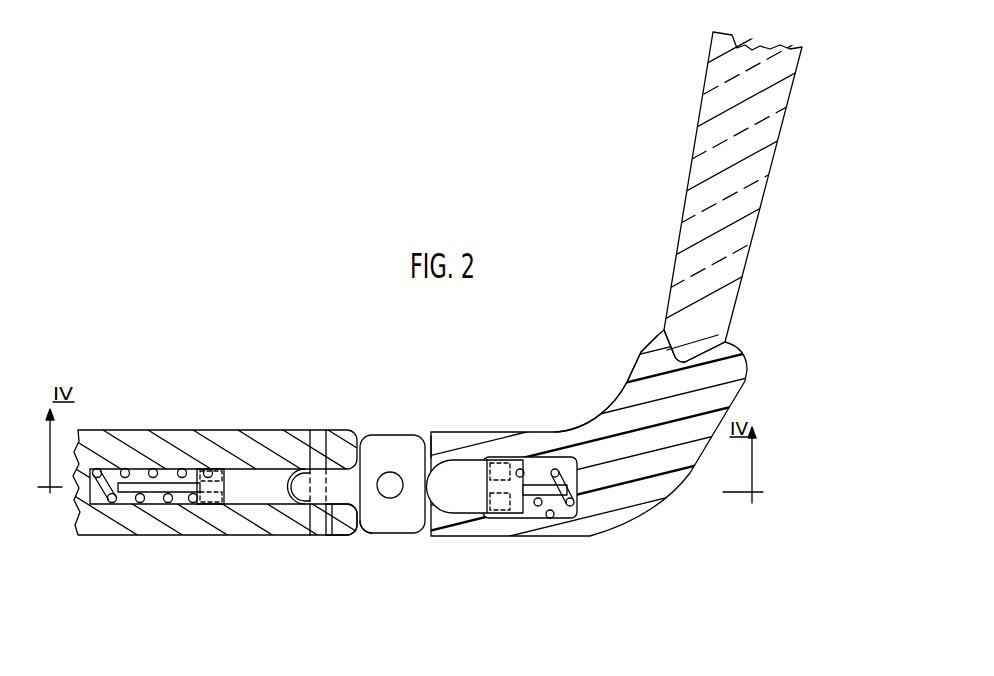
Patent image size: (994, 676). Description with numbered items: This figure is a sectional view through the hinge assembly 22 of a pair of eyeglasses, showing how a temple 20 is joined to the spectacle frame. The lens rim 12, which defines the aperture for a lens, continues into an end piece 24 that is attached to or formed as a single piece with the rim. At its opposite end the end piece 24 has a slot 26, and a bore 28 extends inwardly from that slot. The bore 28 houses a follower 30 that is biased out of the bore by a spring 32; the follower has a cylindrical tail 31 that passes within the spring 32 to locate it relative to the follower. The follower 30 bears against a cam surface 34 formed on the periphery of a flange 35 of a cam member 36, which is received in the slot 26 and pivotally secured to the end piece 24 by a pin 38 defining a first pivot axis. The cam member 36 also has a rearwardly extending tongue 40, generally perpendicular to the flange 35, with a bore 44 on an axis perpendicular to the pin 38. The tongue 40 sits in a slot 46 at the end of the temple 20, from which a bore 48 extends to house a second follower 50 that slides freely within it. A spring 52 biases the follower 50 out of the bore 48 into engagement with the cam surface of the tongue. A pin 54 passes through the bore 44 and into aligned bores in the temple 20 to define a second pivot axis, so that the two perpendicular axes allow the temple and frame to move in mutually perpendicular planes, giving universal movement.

The lens rim 12 is at (685, 217).
The temple 20 is at (264, 489).
The hinge assembly 22 is at (383, 487).
The end piece 24 is at (627, 382).
The slot 26 is at (600, 469).
The bore 28 is at (562, 514).
The follower 30 is at (463, 503).
The cylindrical tail 31 is at (538, 518).
The spring 32 is at (530, 478).
The cam surface 34 is at (427, 453).
The flange 35 is at (370, 518).
The cam member 36 is at (380, 450).
The pin 38 is at (391, 498).
The tongue 40 is at (334, 507).
The bore 44 is at (308, 478).
The slot 46 is at (290, 470).
The bore 48 is at (132, 472).
The follower 50 is at (182, 497).
The spring 52 is at (99, 503).
The pin 54 is at (320, 432).